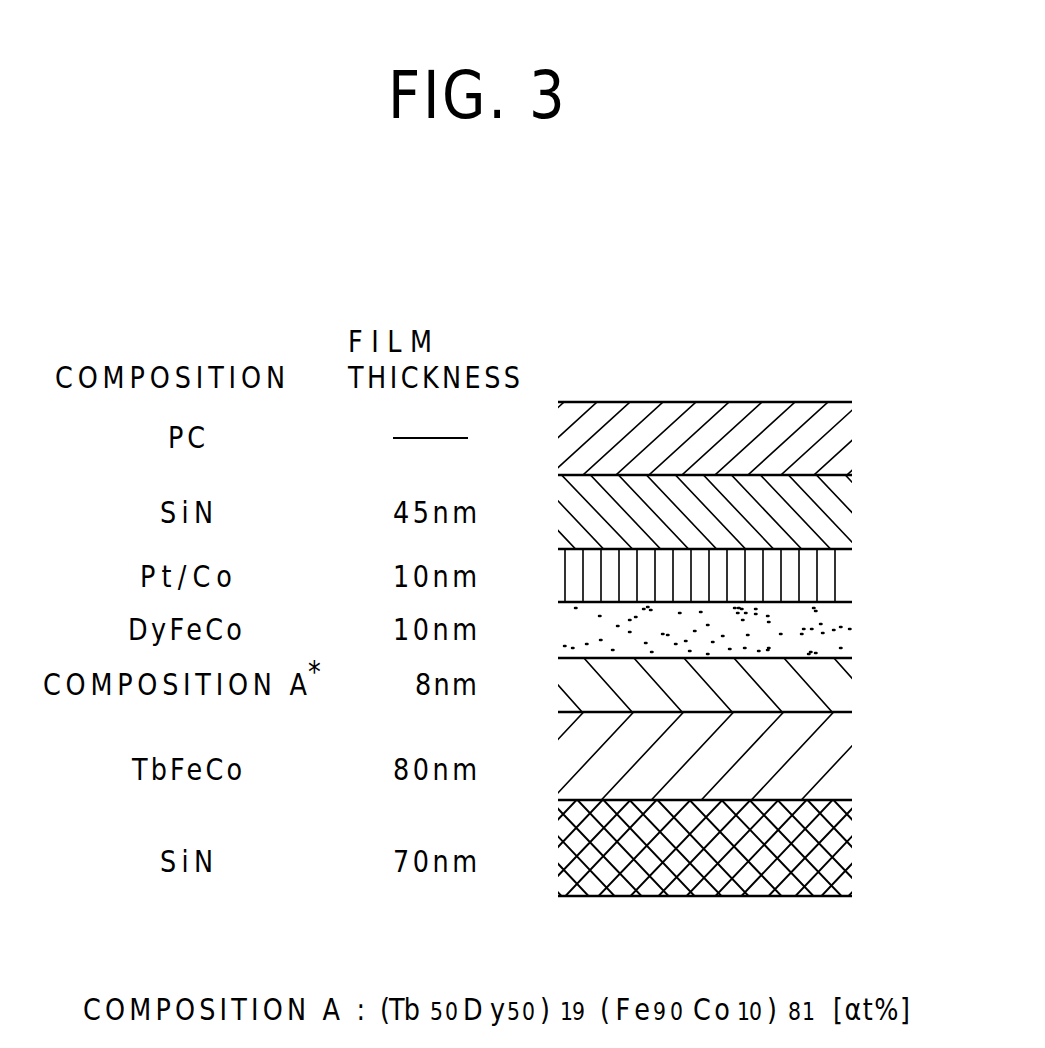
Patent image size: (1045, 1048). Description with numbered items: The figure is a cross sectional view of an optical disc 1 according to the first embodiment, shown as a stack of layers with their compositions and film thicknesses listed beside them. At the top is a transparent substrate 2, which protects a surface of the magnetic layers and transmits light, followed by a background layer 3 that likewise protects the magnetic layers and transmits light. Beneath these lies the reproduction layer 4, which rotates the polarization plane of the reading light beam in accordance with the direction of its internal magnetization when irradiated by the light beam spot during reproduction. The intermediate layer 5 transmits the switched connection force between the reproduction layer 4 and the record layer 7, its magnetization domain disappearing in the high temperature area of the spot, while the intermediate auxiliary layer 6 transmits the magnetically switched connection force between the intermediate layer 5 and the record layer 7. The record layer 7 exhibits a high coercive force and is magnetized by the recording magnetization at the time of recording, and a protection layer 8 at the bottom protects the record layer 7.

The optical disc 1 is at (784, 401).
The transparent substrate 2 is at (868, 402).
The background layer 3 is at (868, 475).
The reproduction layer 4 is at (868, 549).
The intermediate layer 5 is at (868, 602).
The intermediate auxiliary layer 6 is at (868, 658).
The record layer 7 is at (868, 712).
The protection layer 8 is at (868, 800).